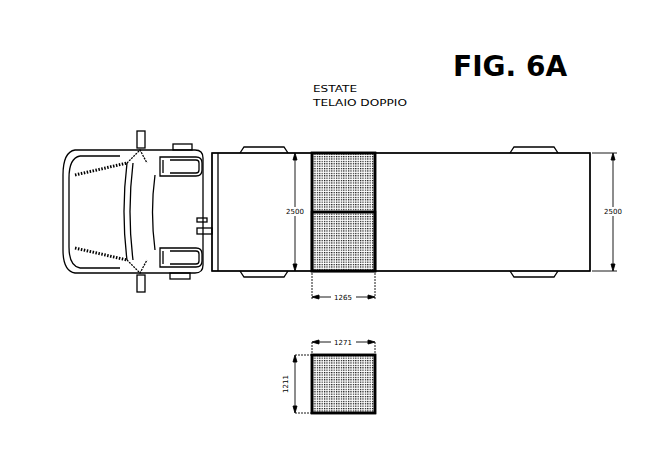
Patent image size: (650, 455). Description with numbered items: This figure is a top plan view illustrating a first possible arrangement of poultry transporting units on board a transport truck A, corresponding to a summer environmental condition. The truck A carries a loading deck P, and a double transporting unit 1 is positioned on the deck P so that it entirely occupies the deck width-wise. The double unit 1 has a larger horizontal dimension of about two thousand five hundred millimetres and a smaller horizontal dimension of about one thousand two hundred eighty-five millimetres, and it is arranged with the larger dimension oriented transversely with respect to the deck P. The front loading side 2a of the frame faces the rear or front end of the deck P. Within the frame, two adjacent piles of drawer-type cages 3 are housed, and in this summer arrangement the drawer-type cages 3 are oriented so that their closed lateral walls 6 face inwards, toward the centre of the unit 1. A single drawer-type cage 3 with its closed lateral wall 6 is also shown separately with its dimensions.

The transport truck A is at (238, 112).
The loading deck P is at (482, 153).
The transporting unit 1 is at (303, 185).
The drawer-type cages 3 is at (327, 258).
The closed lateral walls 6 is at (376, 200).
The front loading side 2a is at (377, 258).